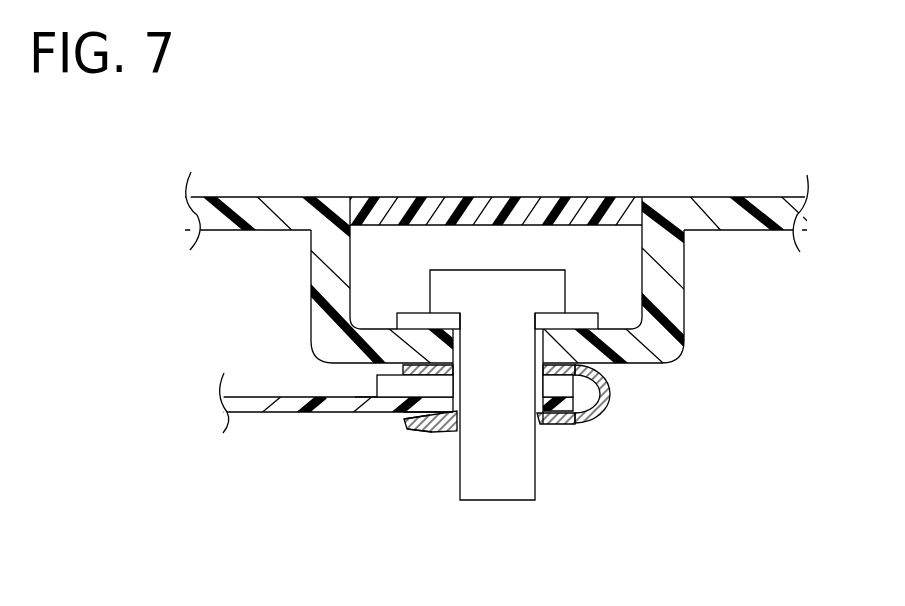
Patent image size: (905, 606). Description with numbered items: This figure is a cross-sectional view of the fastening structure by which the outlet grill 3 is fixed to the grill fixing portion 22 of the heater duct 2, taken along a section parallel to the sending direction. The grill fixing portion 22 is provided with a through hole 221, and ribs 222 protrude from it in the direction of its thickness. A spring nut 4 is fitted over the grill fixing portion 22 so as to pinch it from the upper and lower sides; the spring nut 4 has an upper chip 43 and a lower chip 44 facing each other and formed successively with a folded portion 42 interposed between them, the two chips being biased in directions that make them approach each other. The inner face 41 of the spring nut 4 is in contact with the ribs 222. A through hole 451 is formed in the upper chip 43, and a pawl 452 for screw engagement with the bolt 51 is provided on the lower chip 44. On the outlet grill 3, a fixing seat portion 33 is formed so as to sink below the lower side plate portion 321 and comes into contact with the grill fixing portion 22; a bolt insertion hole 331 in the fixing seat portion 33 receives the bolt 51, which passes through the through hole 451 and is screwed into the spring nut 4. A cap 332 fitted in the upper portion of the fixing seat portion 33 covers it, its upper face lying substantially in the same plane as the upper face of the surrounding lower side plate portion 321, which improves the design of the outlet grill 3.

The heater duct 2 is at (277, 407).
The outlet grill 3 is at (250, 210).
The spring nut 4 is at (609, 451).
The grill fixing portion 22 is at (405, 388).
The fixing seat portion 33 is at (633, 350).
The inner face 41 is at (432, 370).
The folded portion 42 is at (613, 393).
The upper chip 43 is at (368, 397).
The lower chip 44 is at (425, 424).
The bolt 51 is at (497, 303).
The through hole 221 is at (537, 398).
The rib 222 is at (415, 420).
The lower side plate portion 321 is at (713, 213).
The bolt insertion hole 331 is at (517, 335).
The cap 332 is at (538, 205).
The through hole 451 is at (457, 367).
The pawl 452 is at (458, 416).